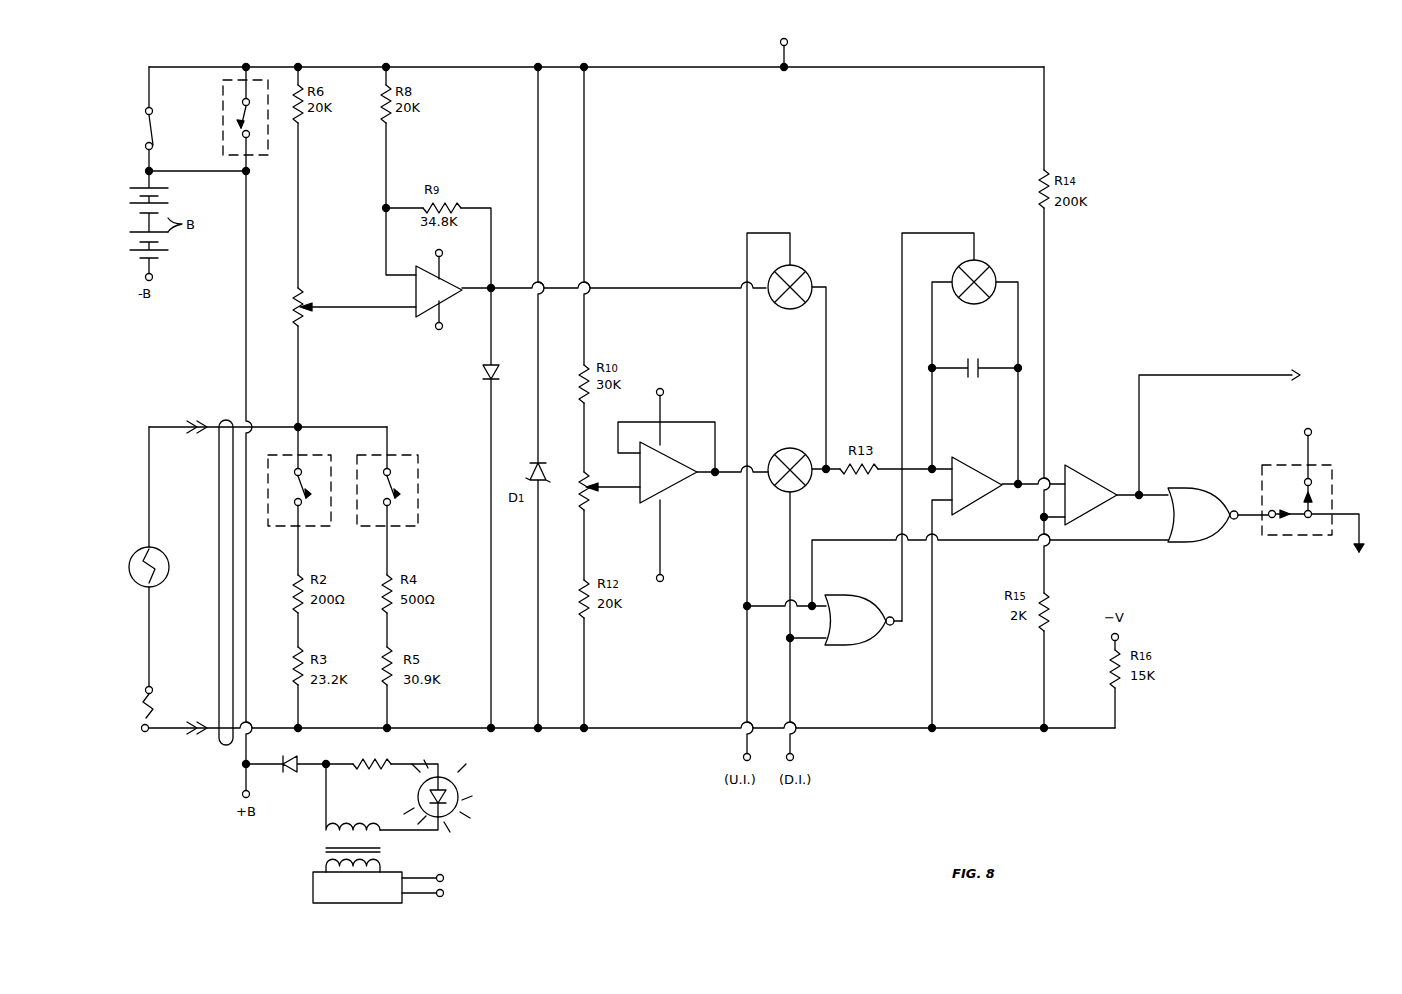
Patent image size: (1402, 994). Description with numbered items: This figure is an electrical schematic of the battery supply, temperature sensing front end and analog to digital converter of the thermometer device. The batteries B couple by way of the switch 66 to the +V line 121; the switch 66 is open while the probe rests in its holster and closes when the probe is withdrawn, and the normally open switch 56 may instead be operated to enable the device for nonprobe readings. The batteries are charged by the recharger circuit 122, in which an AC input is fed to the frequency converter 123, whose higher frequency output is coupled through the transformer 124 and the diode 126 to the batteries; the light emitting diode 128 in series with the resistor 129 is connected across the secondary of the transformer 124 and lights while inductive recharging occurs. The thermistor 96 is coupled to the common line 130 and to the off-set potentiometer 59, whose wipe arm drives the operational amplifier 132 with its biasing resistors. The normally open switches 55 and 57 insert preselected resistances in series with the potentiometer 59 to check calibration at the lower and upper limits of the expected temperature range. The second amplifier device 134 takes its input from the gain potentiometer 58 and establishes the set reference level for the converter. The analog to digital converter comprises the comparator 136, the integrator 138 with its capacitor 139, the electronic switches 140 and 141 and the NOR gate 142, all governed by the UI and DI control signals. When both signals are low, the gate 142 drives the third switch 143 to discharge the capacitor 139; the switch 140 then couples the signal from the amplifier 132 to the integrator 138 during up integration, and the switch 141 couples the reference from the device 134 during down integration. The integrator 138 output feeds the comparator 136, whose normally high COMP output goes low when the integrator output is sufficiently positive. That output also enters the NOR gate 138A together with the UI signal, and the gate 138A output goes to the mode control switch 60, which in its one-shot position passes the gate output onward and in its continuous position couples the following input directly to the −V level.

The +V line 121 is at (467, 67).
The switch 66 is at (148, 132).
The switch 56 is at (223, 100).
The off-set potentiometer 59 is at (305, 297).
The operational amplifier 132 is at (439, 290).
The switch 55 is at (306, 456).
The switch 57 is at (396, 456).
The thermistor 96 is at (168, 548).
The gain potentiometer 58 is at (588, 509).
The second amplifier device 134 is at (668, 482).
The electronic switch 140 is at (800, 264).
The electronic switch 141 is at (782, 445).
The third switch 143 is at (988, 262).
The capacitor 139 is at (994, 350).
The integrator 138 is at (977, 592).
The comparator 136 is at (1088, 454).
The NOR gate 138A is at (1218, 515).
The mode control switch 60 is at (1325, 518).
The NOR gate 142 is at (859, 578).
The common line 130 is at (548, 730).
The diode 126 is at (300, 752).
The resistor 129 is at (385, 760).
The light emitting diode 128 is at (462, 786).
The recharger circuit 122 is at (312, 847).
The transformer 124 is at (382, 847).
The frequency converter 123 is at (313, 884).